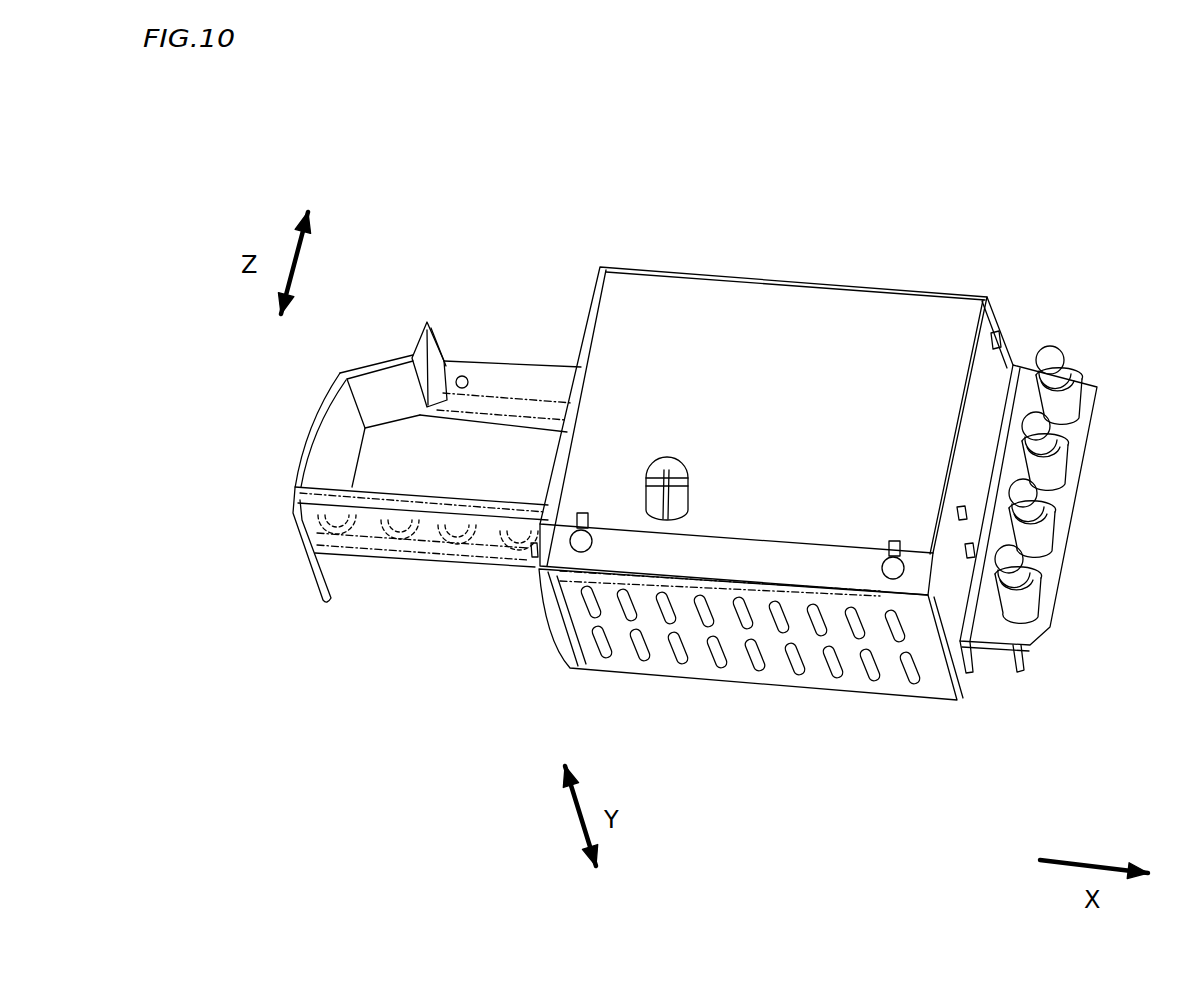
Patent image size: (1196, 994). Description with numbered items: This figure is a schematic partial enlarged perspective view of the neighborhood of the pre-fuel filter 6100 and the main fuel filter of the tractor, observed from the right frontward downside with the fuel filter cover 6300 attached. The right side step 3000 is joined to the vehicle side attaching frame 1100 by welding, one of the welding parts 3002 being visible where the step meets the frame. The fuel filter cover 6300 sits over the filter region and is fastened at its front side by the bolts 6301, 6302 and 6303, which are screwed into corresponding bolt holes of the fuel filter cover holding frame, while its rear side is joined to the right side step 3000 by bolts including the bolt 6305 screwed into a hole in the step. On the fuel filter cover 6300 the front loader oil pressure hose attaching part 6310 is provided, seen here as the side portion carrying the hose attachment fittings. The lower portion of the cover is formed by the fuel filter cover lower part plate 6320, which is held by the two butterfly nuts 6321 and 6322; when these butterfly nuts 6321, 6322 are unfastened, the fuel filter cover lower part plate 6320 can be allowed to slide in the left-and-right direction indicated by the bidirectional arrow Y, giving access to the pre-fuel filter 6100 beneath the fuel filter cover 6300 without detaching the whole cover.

The fuel filter cover 6300 is at (860, 284).
The welding part 3002 is at (447, 360).
The vehicle side attaching frame 1100 is at (550, 365).
The bolt 6301 is at (1005, 343).
The pre-fuel filter 6100 is at (670, 460).
The butterfly nut 6322 is at (576, 521).
The butterfly nut 6321 is at (883, 550).
The bolt 6302 is at (980, 510).
The bolt 6305 is at (527, 548).
The right side step 3000 is at (397, 560).
The bolt 6303 is at (977, 553).
The fuel filter cover lower part plate 6320 is at (743, 680).
The front loader oil pressure hose attaching part 6310 is at (1000, 648).